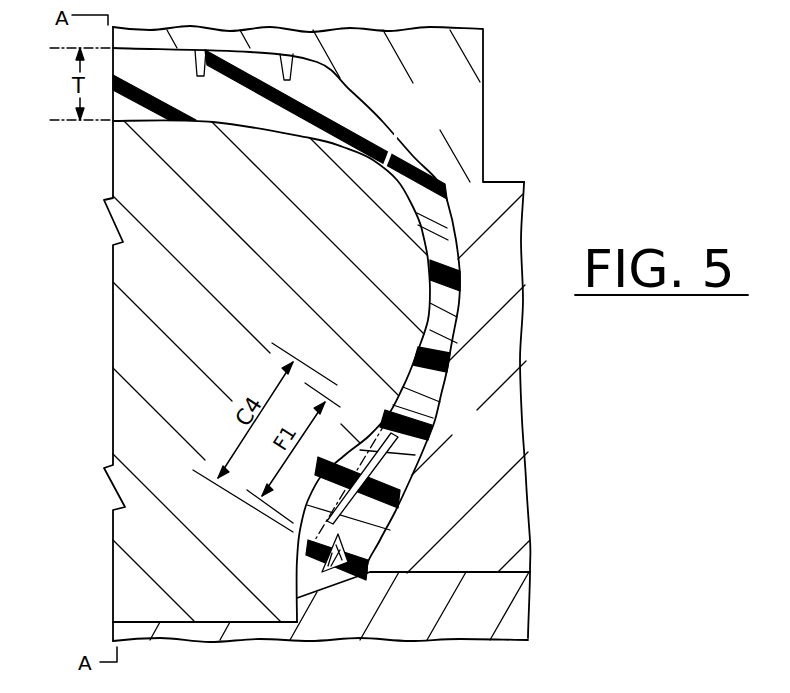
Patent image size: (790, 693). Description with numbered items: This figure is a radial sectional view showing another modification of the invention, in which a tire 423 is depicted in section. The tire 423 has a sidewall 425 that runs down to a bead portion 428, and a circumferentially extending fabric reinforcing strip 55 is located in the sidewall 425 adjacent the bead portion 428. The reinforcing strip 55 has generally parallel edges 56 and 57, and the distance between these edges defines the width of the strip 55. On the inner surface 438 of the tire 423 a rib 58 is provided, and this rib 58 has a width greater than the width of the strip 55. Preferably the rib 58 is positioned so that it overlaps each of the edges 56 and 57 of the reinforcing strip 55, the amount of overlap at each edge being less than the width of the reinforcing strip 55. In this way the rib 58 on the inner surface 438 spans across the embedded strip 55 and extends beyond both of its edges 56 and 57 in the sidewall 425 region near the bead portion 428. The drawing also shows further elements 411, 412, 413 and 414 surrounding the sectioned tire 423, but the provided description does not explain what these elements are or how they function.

The upper mold section 411 is at (484, 76).
The lower mold section 412 is at (531, 598).
The side mold section 413 is at (524, 362).
The inner mold section 414 is at (112, 344).
The tire 423 is at (460, 262).
The sidewall 425 is at (430, 378).
The bead portion 428 is at (360, 548).
The inner surface 438 is at (385, 165).
The fabric reinforcing strip 55 is at (364, 489).
The edge 56 is at (397, 443).
The edge 57 is at (320, 540).
The rib 58 is at (342, 452).